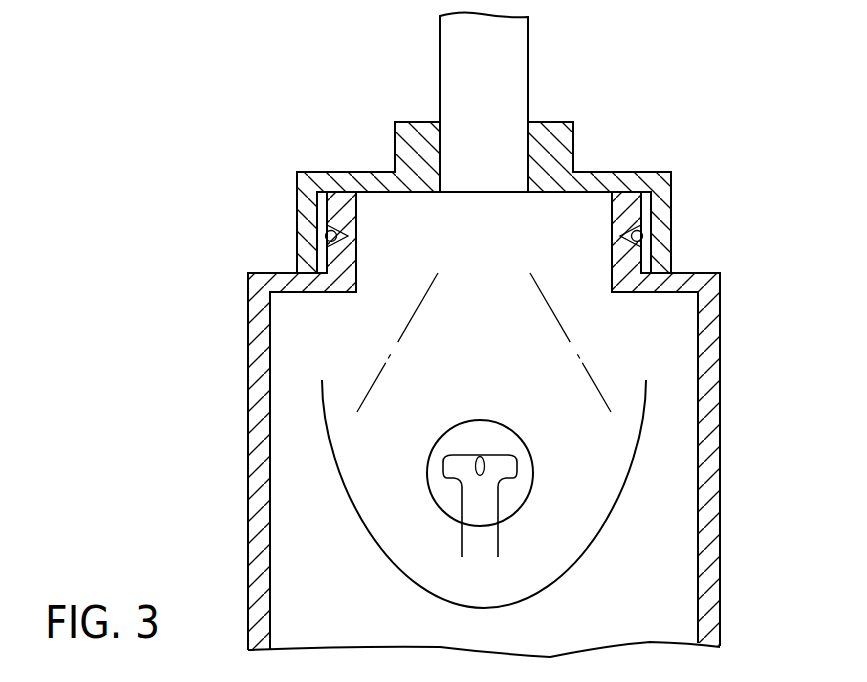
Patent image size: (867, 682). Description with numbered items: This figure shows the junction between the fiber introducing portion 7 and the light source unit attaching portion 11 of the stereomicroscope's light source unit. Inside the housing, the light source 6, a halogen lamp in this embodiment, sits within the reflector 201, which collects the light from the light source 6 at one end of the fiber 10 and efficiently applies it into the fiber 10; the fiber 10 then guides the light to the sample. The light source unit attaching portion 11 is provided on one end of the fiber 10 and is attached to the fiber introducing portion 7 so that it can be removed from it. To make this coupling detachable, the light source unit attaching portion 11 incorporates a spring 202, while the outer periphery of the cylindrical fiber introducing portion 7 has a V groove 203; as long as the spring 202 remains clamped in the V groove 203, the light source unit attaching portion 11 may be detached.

The fiber 10 is at (524, 59).
The light source unit attaching portion 11 is at (665, 189).
The fiber introducing portion 7 is at (333, 210).
The spring 202 is at (322, 237).
The V groove 203 is at (623, 246).
The reflector 201 is at (595, 545).
The light source 6 is at (533, 460).